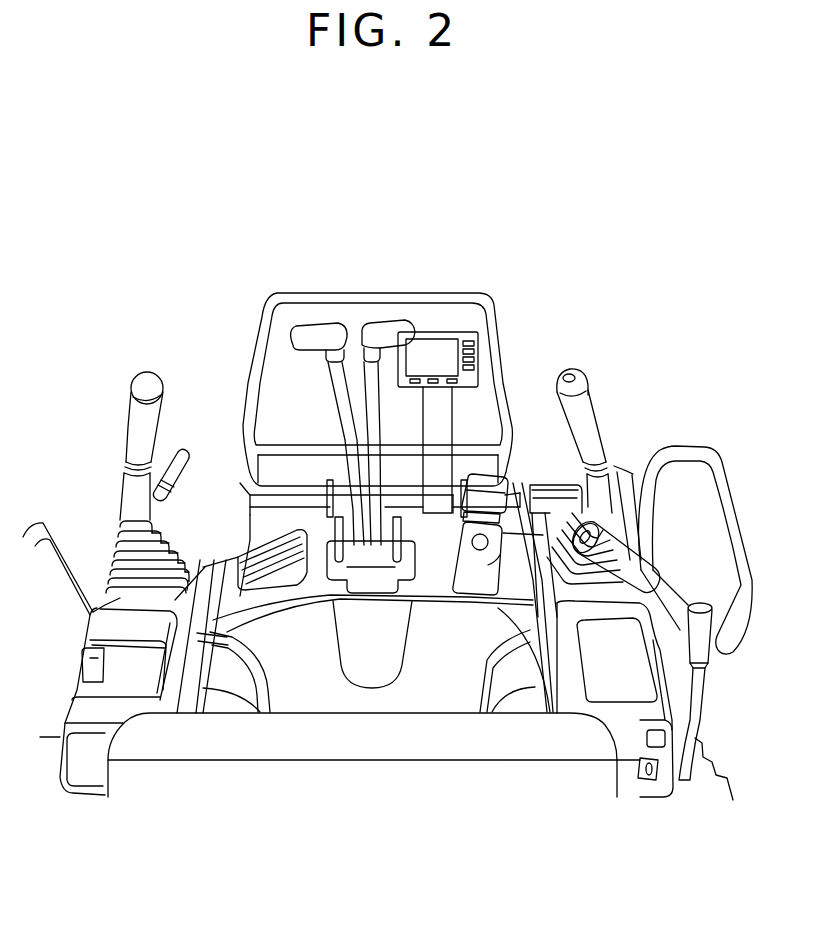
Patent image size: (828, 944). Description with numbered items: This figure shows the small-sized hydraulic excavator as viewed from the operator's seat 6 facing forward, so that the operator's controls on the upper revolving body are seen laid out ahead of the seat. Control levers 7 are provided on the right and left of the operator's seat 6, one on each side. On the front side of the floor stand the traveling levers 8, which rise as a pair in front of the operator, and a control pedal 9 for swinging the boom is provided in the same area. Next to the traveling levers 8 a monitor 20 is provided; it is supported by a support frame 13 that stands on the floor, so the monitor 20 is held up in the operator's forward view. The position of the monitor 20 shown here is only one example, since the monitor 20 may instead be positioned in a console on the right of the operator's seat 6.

The operator's seat 6 is at (383, 745).
The control lever 7 is at (137, 410).
The traveling lever 8 is at (330, 333).
The control pedal 9 is at (485, 567).
The support frame 13 is at (437, 418).
The monitor 20 is at (437, 350).